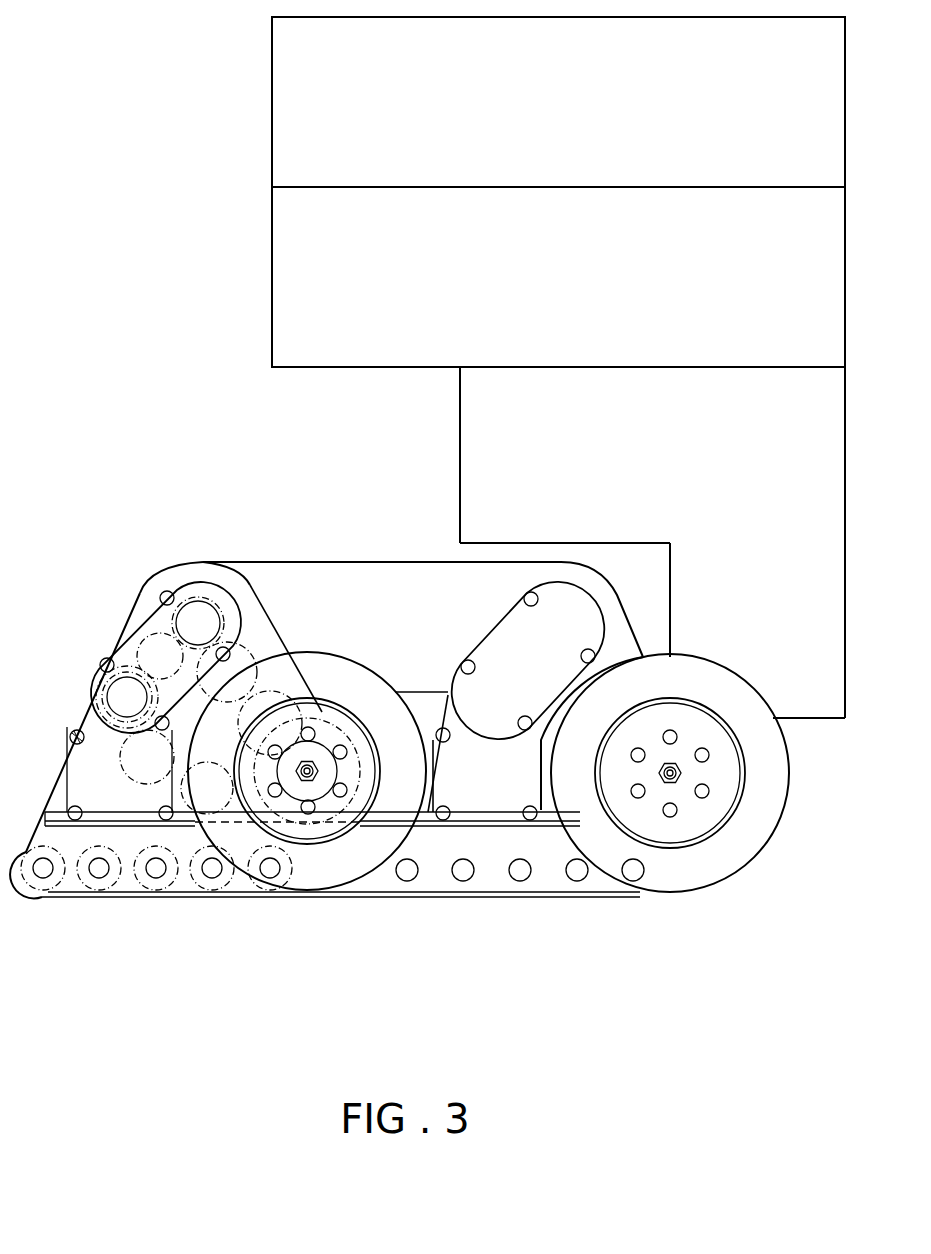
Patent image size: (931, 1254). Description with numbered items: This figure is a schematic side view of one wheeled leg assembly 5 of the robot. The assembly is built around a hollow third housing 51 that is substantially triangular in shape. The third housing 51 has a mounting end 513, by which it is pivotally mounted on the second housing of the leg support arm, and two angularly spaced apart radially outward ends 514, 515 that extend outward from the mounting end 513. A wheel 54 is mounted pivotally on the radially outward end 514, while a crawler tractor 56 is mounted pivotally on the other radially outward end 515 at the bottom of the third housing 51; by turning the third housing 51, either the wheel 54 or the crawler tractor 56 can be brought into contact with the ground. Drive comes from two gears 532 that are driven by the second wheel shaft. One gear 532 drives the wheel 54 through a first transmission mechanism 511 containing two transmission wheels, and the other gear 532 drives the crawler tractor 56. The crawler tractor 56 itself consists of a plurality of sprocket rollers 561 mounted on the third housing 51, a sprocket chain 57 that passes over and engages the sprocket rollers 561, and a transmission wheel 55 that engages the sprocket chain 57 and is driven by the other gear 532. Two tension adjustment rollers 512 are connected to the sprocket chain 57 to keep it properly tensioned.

The wheeled leg assembly 5 is at (305, 516).
The third housing 51 is at (152, 595).
The first transmission mechanism 511 is at (262, 652).
The tension adjustment rollers 512 is at (202, 786).
The mounting end 513 is at (240, 598).
The radially outward end 514 is at (352, 780).
The radially outward end 515 is at (78, 770).
The gear 532 is at (196, 601).
The wheel 54 is at (323, 884).
The transmission wheel 55 is at (127, 682).
The crawler tractor 56 is at (154, 900).
The sprocket rollers 561 is at (72, 897).
The sprocket chain 57 is at (37, 824).